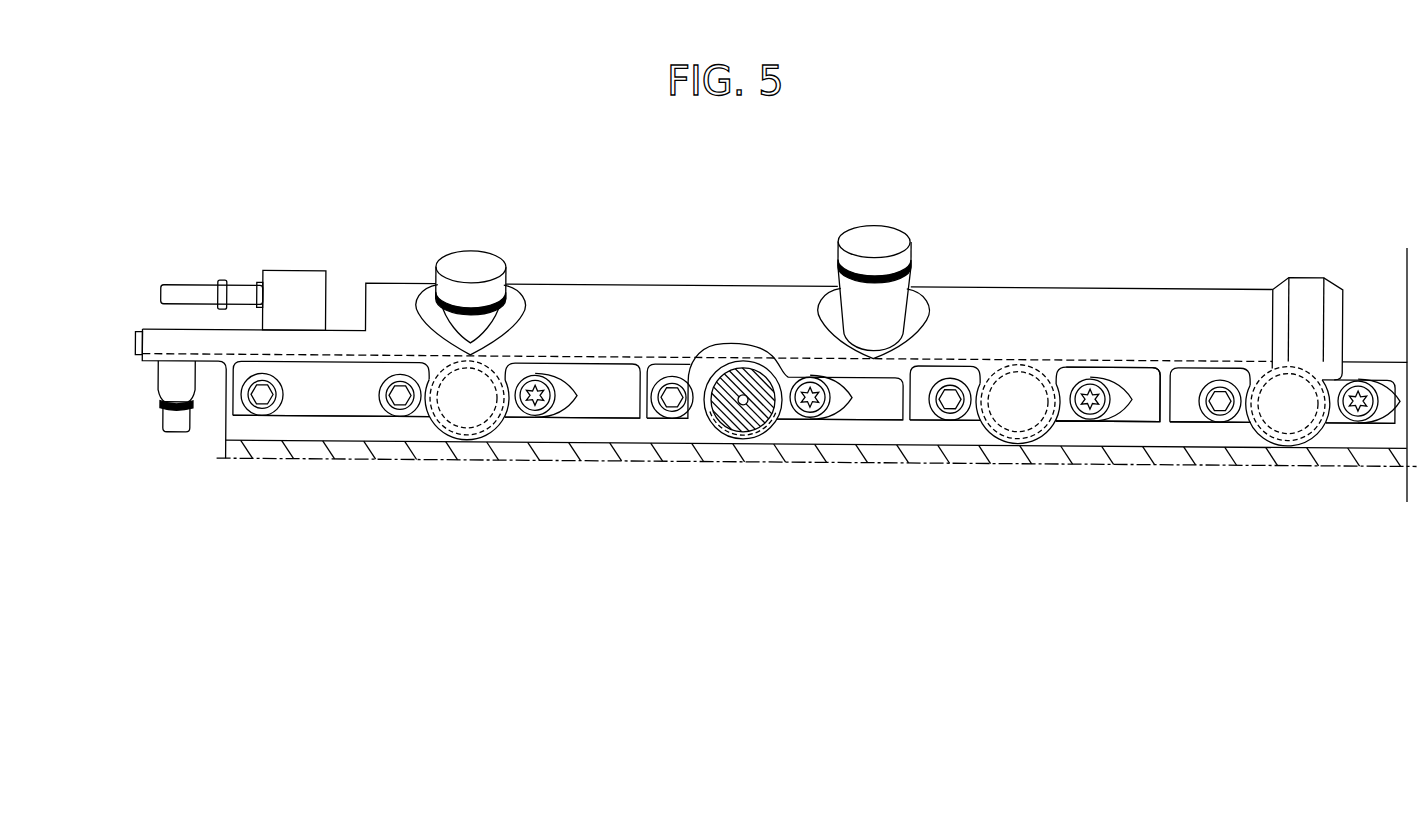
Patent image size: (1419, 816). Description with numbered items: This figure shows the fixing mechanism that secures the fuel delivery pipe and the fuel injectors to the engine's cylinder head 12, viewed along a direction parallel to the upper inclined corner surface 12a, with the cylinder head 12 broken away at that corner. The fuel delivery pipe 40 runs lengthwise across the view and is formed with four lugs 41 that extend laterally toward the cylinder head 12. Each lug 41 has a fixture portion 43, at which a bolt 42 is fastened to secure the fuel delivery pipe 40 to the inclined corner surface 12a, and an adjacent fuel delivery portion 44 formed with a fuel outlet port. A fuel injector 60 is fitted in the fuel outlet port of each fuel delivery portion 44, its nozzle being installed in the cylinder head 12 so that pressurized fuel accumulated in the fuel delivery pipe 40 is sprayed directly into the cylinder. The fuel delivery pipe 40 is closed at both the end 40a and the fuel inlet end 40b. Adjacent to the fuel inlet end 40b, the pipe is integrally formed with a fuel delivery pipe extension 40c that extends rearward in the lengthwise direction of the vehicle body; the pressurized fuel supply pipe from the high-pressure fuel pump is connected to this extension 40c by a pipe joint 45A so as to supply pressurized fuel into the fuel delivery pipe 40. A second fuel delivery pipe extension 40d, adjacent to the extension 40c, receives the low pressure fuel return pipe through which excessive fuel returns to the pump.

The cylinder head 12 is at (860, 458).
The upper inclined corner surface 12a is at (1142, 380).
The fuel delivery pipe 40 is at (980, 283).
The closed end 40a is at (1317, 278).
The fuel inlet end 40b is at (142, 330).
The fuel delivery pipe extension 40c is at (158, 377).
The fuel delivery pipe extension 40d is at (203, 284).
The lug 41 is at (313, 417).
The bolt 42 is at (258, 414).
The fixture portion 43 is at (360, 407).
The fuel delivery portion 44 is at (467, 417).
The pipe joint 45A is at (166, 433).
The fuel injector 60 is at (485, 445).